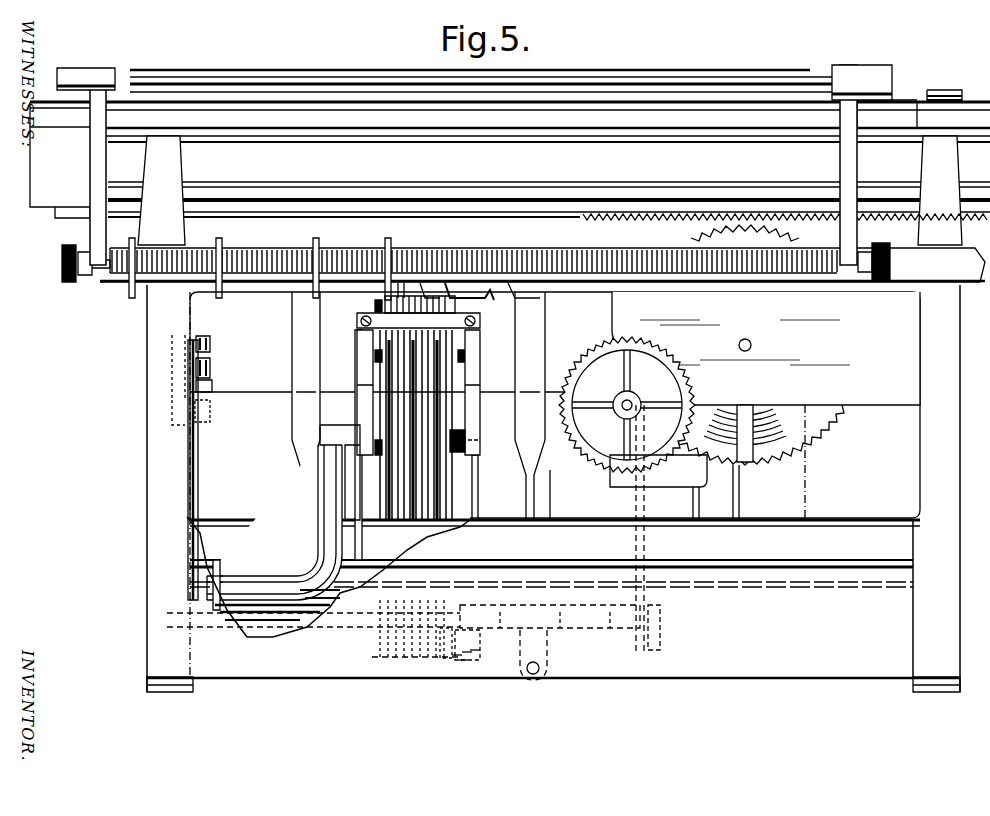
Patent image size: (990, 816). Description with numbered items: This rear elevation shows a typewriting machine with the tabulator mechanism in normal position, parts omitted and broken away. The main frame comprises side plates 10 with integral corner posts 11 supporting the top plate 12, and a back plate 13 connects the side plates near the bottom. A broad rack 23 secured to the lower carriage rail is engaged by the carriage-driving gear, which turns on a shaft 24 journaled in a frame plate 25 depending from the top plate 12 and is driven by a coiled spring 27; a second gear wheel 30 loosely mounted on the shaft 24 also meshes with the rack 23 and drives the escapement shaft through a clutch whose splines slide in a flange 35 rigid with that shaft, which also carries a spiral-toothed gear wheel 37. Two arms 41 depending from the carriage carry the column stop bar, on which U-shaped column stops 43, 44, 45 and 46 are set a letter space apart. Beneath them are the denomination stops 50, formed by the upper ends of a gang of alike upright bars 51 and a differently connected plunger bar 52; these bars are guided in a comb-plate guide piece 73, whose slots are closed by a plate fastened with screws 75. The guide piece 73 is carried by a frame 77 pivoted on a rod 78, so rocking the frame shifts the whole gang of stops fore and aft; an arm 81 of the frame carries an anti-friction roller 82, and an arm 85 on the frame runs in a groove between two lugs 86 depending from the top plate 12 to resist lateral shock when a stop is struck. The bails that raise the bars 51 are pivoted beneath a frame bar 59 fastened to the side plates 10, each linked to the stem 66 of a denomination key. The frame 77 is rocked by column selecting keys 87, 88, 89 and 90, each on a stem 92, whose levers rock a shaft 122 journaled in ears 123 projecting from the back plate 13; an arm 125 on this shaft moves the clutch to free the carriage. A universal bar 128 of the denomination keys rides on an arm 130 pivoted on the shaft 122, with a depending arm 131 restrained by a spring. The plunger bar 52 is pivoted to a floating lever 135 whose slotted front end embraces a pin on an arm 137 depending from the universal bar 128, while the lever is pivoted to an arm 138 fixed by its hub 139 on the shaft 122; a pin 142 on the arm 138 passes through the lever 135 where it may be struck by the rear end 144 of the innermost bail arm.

The side plates 10 is at (147, 558).
The corner posts 11 is at (915, 440).
The top plate 12 is at (523, 262).
The back plate 13 is at (551, 599).
The rack 23 is at (615, 213).
The shaft 24 is at (749, 341).
The frame plate 25 is at (766, 348).
The spring 27 is at (771, 402).
The second gear wheel 30 is at (745, 359).
The flange 35 is at (632, 400).
The gear wheel 37 is at (548, 472).
The arms 41 is at (98, 172).
The column stop 43 is at (132, 246).
The column stop 44 is at (220, 246).
The column stop 45 is at (316, 246).
The column stop 46 is at (388, 246).
The denomination stops 50 is at (410, 290).
The upright bars 51 is at (390, 345).
The upright bar 52 is at (620, 412).
The frame bar 59 is at (322, 592).
The stem 66 is at (300, 468).
The guide piece 73 is at (472, 318).
The screws 75 is at (360, 322).
The frame 77 is at (476, 380).
The rod 78 is at (460, 440).
The arm 81 is at (328, 490).
The anti-friction roller 82 is at (222, 578).
The arm 85 is at (470, 292).
The lugs 86 is at (432, 300).
The column selecting key 87 is at (200, 338).
The column selecting key 88 is at (210, 366).
The column selecting key 89 is at (212, 386).
The column selecting key 90 is at (212, 406).
The stem 92 is at (196, 453).
The rock shaft 122 is at (275, 620).
The ears 123 is at (658, 606).
The arm 125 is at (645, 500).
The universal bar 128 is at (374, 628).
The arm 130 is at (556, 606).
The depending arm 131 is at (547, 648).
The floating lever 135 is at (462, 662).
The arm 137 is at (474, 656).
The arm 138 is at (468, 658).
The hub 139 is at (478, 646).
The pin 142 is at (448, 656).
The rear end 144 is at (455, 660).